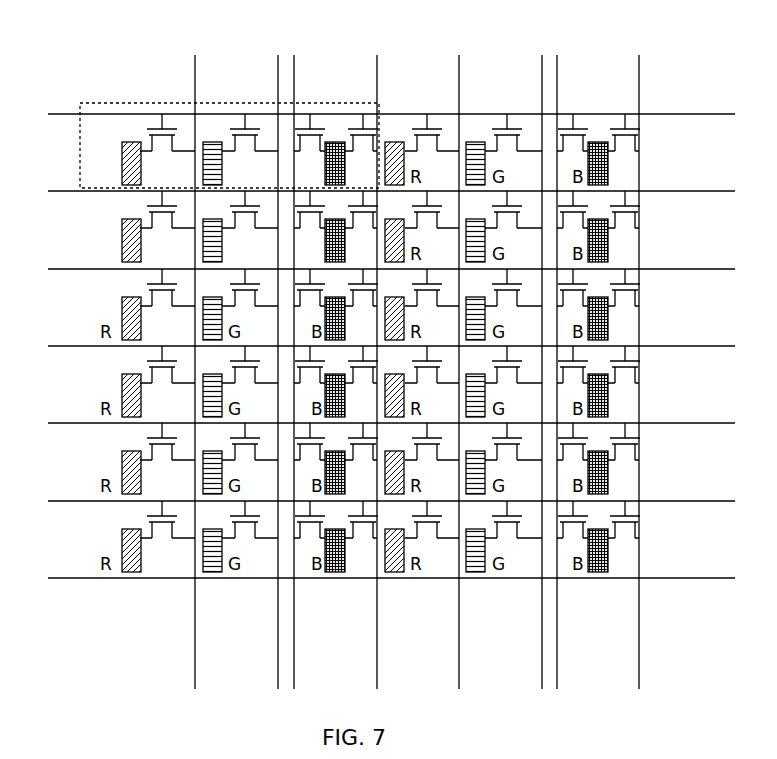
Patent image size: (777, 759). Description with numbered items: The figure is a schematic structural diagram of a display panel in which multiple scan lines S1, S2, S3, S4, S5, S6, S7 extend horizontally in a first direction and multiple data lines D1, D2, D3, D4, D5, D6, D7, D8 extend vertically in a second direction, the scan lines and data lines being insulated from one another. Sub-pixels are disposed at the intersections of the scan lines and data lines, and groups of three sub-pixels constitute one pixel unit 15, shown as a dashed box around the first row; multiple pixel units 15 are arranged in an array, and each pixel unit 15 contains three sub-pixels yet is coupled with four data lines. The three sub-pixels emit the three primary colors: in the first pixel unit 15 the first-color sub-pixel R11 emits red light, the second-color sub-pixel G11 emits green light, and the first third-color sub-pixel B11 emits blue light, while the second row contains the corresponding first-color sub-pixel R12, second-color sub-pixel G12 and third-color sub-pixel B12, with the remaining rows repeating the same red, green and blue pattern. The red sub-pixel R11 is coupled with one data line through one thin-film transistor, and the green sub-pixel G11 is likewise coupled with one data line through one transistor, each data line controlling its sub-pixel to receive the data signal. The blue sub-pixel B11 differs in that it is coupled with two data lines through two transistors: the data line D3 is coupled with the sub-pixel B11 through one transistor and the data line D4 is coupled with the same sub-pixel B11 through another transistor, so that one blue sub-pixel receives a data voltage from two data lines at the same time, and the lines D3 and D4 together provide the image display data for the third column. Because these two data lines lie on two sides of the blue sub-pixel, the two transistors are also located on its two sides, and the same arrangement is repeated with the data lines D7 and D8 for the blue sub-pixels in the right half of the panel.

The pixel unit 15 is at (107, 103).
The scan line S1 is at (370, 115).
The scan line S2 is at (370, 192).
The scan line S3 is at (370, 270).
The scan line S4 is at (370, 347).
The scan line S5 is at (370, 424).
The scan line S6 is at (370, 502).
The scan line S7 is at (370, 579).
The data line D1 is at (192, 355).
The data line D2 is at (272, 355).
The data line D3 is at (304, 355).
The data line D4 is at (373, 355).
The data line D5 is at (455, 355).
The data line D6 is at (532, 355).
The data line D7 is at (563, 355).
The data line D8 is at (637, 355).
The first-color sub-pixel R11 is at (114, 164).
The second-color sub-pixel G11 is at (233, 164).
The first third-color sub-pixel B11 is at (320, 164).
The first-color sub-pixel R12 is at (114, 241).
The second-color sub-pixel G12 is at (233, 241).
The third-color sub-pixel B12 is at (320, 241).